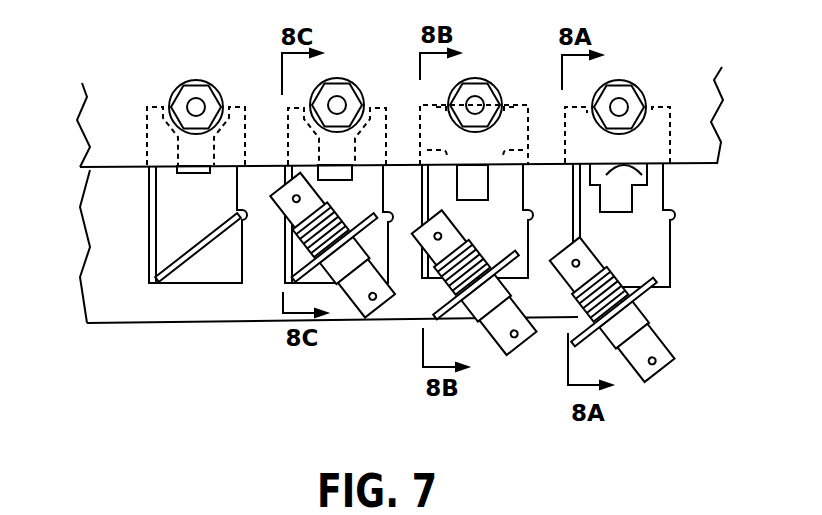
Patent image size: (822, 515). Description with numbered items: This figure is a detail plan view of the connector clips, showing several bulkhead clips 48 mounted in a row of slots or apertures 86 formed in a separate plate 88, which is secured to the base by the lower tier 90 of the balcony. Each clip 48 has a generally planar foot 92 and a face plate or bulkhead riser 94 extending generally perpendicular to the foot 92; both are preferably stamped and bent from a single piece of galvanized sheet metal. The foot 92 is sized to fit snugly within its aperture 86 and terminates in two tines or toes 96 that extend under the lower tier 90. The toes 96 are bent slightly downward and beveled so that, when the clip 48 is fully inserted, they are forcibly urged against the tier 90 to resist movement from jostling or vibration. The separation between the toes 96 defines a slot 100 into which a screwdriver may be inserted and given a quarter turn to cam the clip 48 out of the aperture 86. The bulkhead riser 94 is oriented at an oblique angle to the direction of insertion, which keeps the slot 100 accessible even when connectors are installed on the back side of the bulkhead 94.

The bulkhead clip 48 is at (147, 223).
The aperture 86 is at (640, 163).
The plate 88 is at (136, 298).
The lower tier 90 is at (695, 148).
The foot 92 is at (167, 233).
The bulkhead riser 94 is at (197, 238).
The toes 96 is at (155, 103).
The slot 100 is at (193, 167).